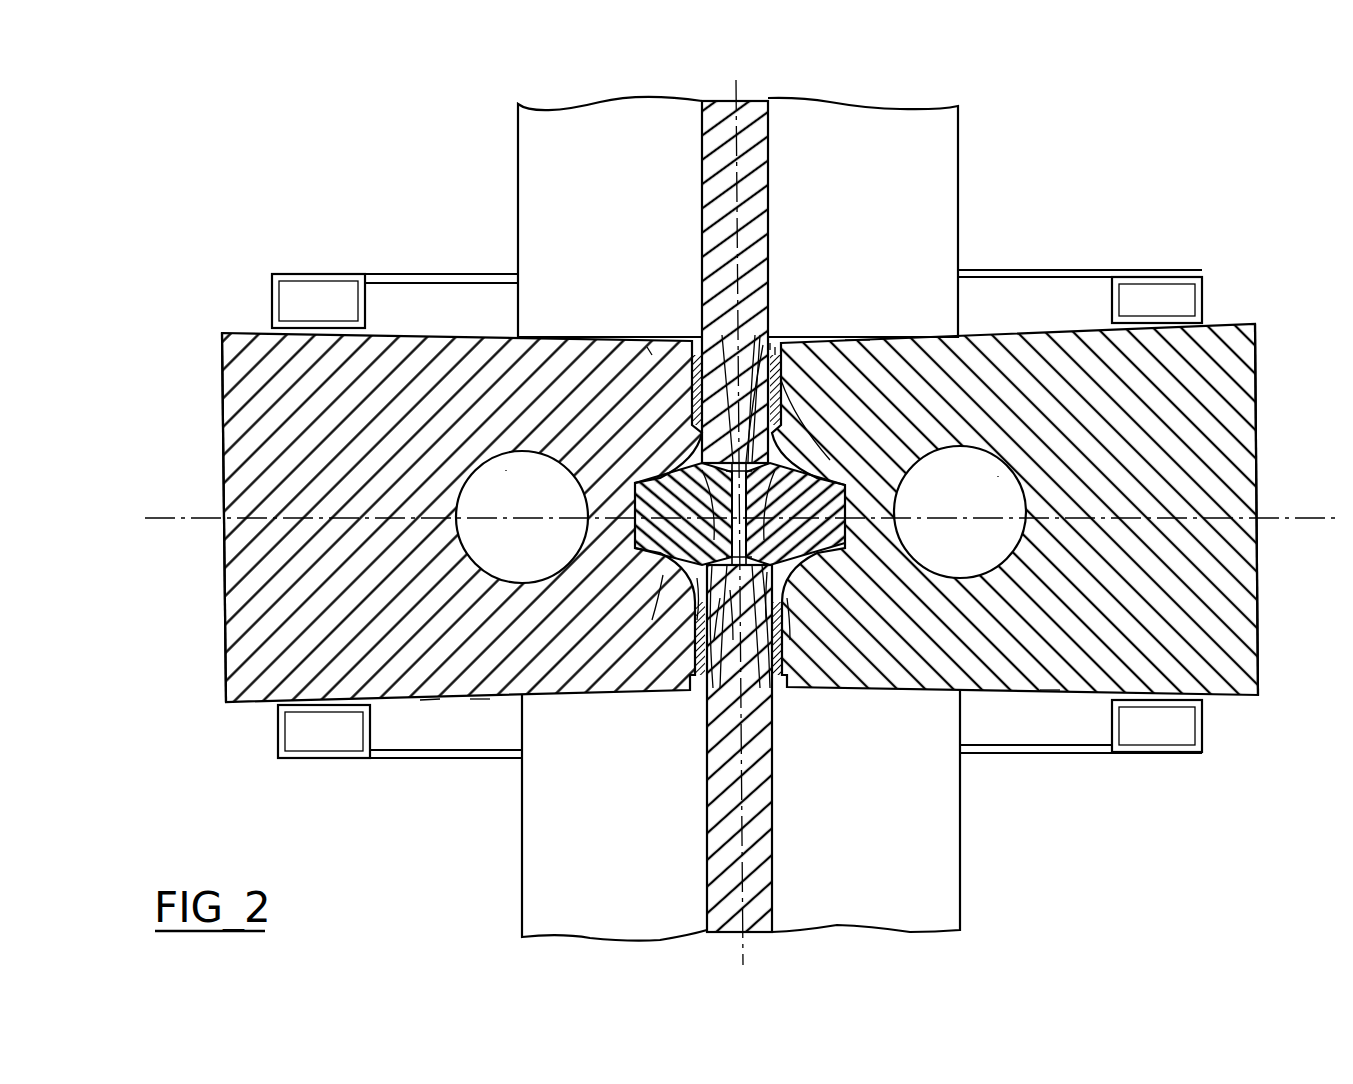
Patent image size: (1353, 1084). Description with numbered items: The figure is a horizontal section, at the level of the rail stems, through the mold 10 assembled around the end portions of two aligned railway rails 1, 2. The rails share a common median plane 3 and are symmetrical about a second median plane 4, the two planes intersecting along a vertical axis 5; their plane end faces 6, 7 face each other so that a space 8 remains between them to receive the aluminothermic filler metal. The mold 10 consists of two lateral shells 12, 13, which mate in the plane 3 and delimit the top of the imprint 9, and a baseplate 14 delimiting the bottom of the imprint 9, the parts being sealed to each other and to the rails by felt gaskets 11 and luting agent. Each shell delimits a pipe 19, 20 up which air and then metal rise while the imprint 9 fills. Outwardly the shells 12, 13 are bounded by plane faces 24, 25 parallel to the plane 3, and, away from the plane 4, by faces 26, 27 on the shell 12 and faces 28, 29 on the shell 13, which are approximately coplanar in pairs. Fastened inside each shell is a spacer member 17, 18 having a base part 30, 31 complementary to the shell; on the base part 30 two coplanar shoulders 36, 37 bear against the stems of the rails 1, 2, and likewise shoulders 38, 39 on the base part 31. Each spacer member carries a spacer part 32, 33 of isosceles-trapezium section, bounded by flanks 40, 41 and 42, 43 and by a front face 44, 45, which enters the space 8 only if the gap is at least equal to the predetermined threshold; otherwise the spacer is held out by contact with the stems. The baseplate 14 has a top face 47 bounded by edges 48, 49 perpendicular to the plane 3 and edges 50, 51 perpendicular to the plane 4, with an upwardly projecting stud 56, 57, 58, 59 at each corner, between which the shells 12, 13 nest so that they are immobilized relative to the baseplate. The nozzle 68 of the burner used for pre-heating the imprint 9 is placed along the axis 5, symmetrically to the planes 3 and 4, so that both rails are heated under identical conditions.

The railway rail 1 is at (508, 887).
The railway rail 2 is at (488, 192).
The median plane of symmetry 3 is at (757, 950).
The median plane 4 is at (165, 522).
The vertical axis 5 is at (853, 338).
The end face 6 is at (787, 598).
The end face 7 is at (770, 343).
The space 8 is at (697, 578).
The imprint 9 is at (663, 575).
The mold 10 is at (215, 668).
The felt gaskets 11 is at (692, 343).
The lateral shell 12 is at (428, 705).
The lateral shell 13 is at (1240, 695).
The baseplate 14 is at (385, 740).
The spacer member 17 is at (630, 560).
The spacer member 18 is at (836, 560).
The pipe 19 is at (506, 470).
The pipe 20 is at (998, 476).
The plane face 24 is at (221, 447).
The plane face 25 is at (1259, 455).
The face 26 is at (480, 700).
The face 27 is at (575, 335).
The face 28 is at (1052, 695).
The face 29 is at (912, 335).
The base part 30 is at (635, 544).
The base part 31 is at (847, 532).
The spacer part 32 is at (647, 347).
The spacer part 33 is at (855, 483).
The shoulder 36 is at (720, 598).
The shoulder 37 is at (702, 340).
The shoulder 38 is at (767, 572).
The shoulder 39 is at (775, 347).
The flank 40 is at (730, 590).
The flank 41 is at (727, 462).
The flank 42 is at (773, 700).
The flank 43 is at (763, 345).
The front face 44 is at (847, 500).
The front face 45 is at (635, 532).
The top face 47 is at (1000, 730).
The edge 48 is at (1100, 755).
The edge 49 is at (1063, 270).
The edge 50 is at (272, 738).
The edge 51 is at (1207, 737).
The stud 56 is at (312, 742).
The stud 57 is at (315, 300).
The stud 58 is at (1157, 733).
The stud 59 is at (1160, 295).
The nozzle 68 is at (840, 440).